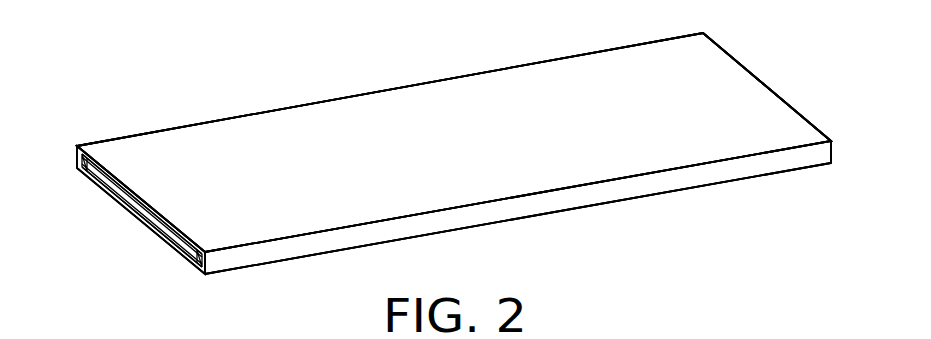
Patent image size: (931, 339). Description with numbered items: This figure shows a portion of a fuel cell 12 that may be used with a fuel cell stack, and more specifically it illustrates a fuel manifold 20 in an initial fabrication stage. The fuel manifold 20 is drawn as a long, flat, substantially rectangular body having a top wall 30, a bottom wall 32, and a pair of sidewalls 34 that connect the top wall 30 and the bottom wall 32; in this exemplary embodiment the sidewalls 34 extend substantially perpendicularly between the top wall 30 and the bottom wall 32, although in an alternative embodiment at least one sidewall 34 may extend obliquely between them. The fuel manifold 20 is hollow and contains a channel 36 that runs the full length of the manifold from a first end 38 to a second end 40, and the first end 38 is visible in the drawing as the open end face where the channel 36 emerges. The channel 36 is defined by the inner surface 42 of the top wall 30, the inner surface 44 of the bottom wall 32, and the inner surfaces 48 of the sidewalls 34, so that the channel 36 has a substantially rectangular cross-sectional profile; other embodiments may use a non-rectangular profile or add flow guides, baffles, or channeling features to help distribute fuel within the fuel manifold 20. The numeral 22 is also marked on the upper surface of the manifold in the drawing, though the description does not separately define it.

The fuel cell 12 is at (121, 111).
The fuel manifold 20 is at (680, 47).
The top surface 22 is at (427, 93).
The top wall 30 is at (772, 98).
The bottom wall 32 is at (276, 263).
The sidewalls 34 is at (169, 127).
The channel 36 is at (152, 219).
The first end 38 is at (209, 276).
The second end 40 is at (748, 66).
The inner surface of top wall 42 is at (118, 197).
The inner surface of bottom wall 44 is at (165, 238).
The inner surface of sidewalls 48 is at (88, 175).